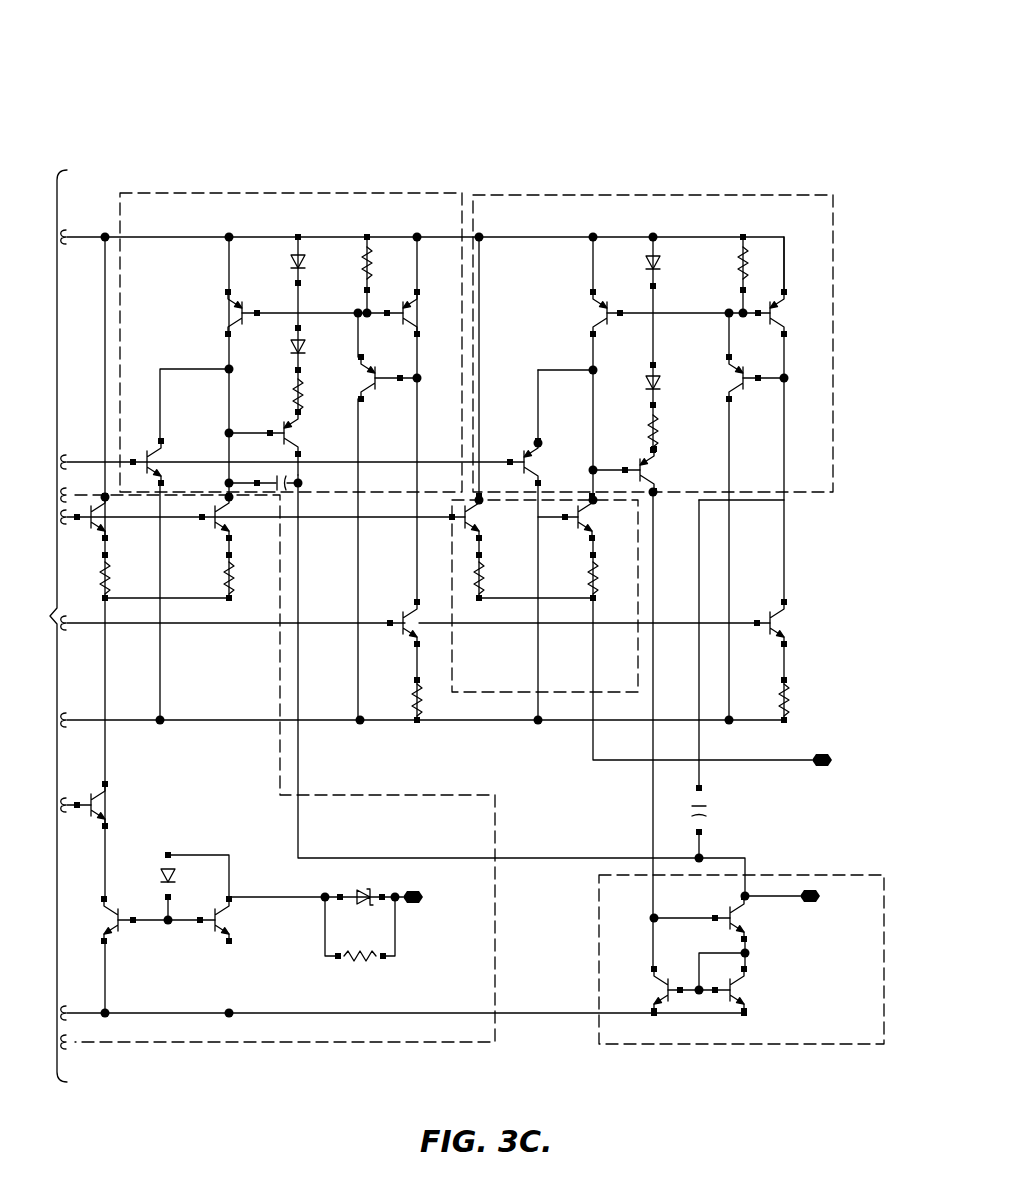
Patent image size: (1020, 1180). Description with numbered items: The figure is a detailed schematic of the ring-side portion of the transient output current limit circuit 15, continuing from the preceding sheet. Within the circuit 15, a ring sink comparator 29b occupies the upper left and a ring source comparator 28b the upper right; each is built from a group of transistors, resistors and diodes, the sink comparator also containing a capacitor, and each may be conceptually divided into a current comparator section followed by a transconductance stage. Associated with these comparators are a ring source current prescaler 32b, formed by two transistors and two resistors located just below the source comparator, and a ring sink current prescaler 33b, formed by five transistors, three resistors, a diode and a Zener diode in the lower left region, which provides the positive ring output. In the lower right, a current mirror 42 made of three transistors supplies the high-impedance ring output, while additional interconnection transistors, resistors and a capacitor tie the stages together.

The transient output current limit circuit 15 is at (616, 80).
The ring source comparator 28b is at (630, 188).
The ring sink comparator 29b is at (273, 188).
The ring source current prescaler 32b is at (488, 702).
The ring sink current prescaler 33b is at (281, 1050).
The current mirror 42 is at (683, 1052).